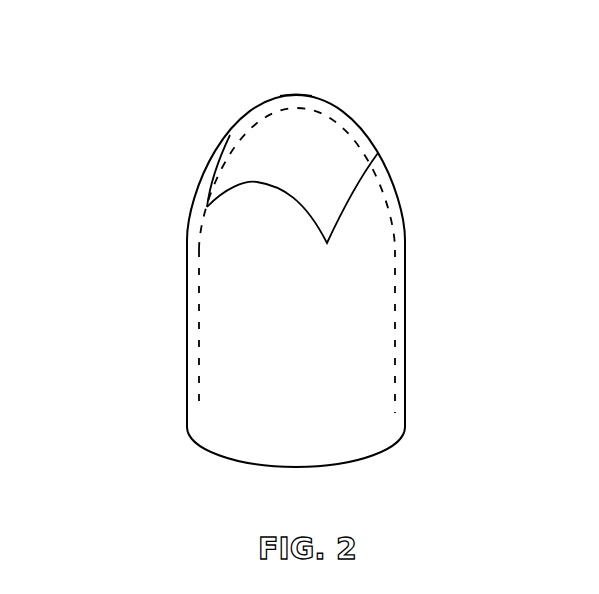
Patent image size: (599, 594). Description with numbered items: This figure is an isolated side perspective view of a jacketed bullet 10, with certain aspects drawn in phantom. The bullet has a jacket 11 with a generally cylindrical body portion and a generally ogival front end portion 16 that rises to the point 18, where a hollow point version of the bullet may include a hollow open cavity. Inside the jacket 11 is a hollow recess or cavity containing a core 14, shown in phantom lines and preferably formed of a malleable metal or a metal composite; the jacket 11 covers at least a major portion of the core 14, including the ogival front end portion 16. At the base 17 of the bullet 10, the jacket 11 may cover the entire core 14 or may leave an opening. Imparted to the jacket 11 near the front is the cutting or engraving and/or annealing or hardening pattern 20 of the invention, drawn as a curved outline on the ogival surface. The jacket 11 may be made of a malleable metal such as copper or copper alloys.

The jacketed bullet 10 is at (353, 348).
The jacket 11 is at (398, 188).
The core 14 is at (352, 386).
The ogival front end portion 16 is at (232, 133).
The base 17 is at (190, 438).
The point 18 is at (287, 98).
The pattern 20 is at (343, 196).